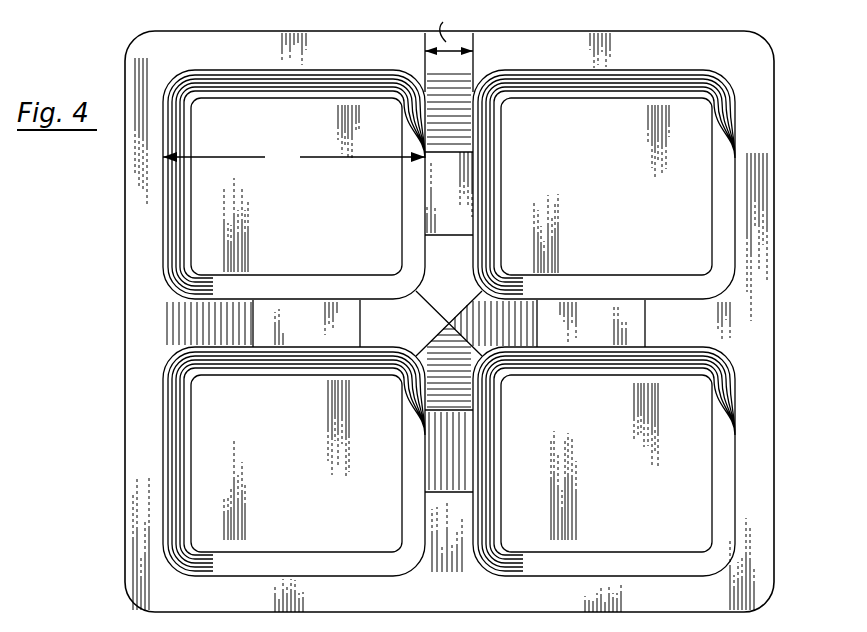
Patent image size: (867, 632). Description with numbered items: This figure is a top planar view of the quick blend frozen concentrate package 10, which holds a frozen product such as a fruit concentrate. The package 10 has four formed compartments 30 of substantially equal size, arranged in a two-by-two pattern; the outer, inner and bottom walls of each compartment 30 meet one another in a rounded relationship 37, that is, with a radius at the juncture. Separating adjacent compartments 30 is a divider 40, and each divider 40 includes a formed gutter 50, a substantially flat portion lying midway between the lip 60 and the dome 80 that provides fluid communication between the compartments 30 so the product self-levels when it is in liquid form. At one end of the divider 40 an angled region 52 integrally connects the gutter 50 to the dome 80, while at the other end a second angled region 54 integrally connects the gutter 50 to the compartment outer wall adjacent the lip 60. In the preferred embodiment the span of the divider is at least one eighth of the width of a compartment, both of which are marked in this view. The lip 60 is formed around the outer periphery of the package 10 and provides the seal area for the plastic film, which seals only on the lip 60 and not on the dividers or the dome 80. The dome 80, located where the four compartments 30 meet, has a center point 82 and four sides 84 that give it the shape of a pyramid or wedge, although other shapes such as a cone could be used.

The quick blend frozen concentrate package 10 is at (108, 333).
The compartment 30 is at (311, 196).
The rounded relationship 37 is at (478, 565).
The divider 40 is at (275, 352).
The gutter 50 is at (305, 320).
The angled region 52 is at (377, 327).
The angled region 54 is at (210, 323).
The lip 60 is at (147, 460).
The dome 80 is at (480, 326).
The center point 82 is at (446, 325).
The side 84 is at (447, 282).